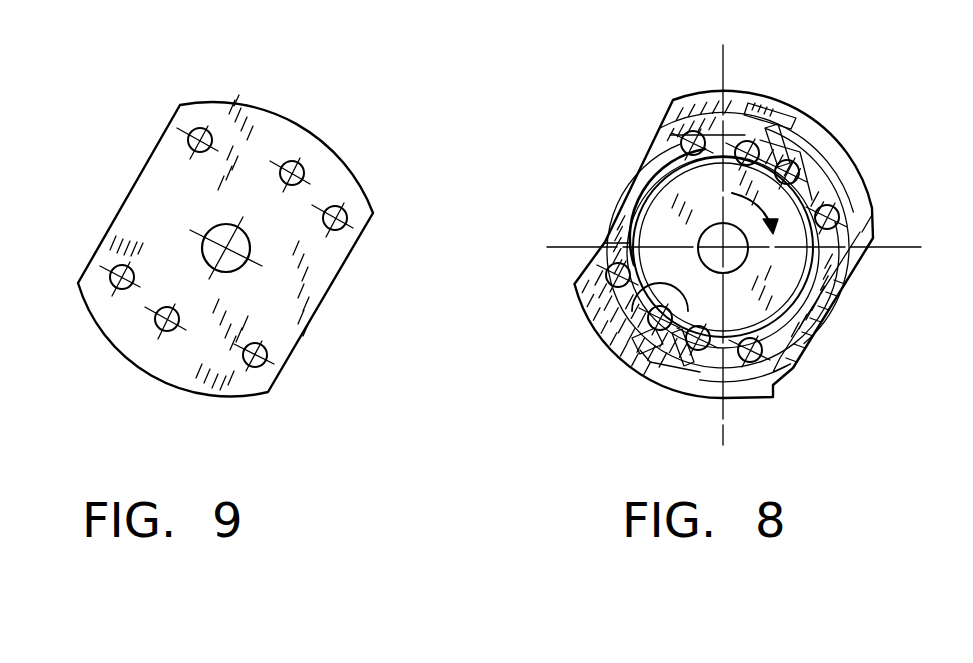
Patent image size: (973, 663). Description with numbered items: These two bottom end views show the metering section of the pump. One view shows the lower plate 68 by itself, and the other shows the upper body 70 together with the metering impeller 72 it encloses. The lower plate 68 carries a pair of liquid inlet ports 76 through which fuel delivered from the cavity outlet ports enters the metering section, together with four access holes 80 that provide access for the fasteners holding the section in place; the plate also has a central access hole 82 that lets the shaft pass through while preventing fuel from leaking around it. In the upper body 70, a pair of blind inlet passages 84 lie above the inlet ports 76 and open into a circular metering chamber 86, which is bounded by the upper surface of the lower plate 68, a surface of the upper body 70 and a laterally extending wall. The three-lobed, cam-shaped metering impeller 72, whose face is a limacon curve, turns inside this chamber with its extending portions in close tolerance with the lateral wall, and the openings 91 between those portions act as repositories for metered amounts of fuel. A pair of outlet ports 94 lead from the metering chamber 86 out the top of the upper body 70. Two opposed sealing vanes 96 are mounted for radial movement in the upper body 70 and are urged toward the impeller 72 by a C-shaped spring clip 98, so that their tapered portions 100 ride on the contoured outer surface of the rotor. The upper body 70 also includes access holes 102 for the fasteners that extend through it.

In FIG. 9, the lower plate 68 is at (374, 211).
In FIG. 9, the upper body 70 is at (170, 330).
In FIG. 8, the upper body 70 is at (672, 118).
In FIG. 8, the metering impeller 72 is at (795, 263).
In FIG. 9, the liquid inlet ports 76 is at (292, 160).
In FIG. 9, the access holes 80 is at (200, 128).
In FIG. 9, the central bore 82 is at (248, 254).
In FIG. 8, the blind inlet passages 84 is at (800, 158).
In FIG. 8, the metering chamber 86 is at (645, 180).
In FIG. 8, the openings 91 is at (815, 190).
In FIG. 8, the outlet ports 94 is at (745, 140).
In FIG. 8, the sealing vanes 96 is at (800, 125).
In FIG. 8, the C-shaped spring clip 98 is at (872, 212).
In FIG. 8, the tapered portions 100 is at (668, 288).
In FIG. 8, the access holes 102 is at (607, 249).